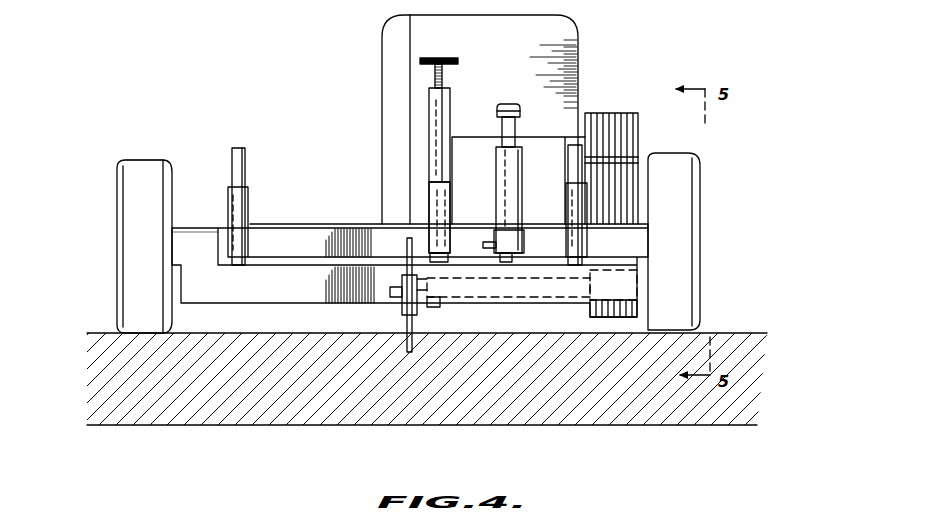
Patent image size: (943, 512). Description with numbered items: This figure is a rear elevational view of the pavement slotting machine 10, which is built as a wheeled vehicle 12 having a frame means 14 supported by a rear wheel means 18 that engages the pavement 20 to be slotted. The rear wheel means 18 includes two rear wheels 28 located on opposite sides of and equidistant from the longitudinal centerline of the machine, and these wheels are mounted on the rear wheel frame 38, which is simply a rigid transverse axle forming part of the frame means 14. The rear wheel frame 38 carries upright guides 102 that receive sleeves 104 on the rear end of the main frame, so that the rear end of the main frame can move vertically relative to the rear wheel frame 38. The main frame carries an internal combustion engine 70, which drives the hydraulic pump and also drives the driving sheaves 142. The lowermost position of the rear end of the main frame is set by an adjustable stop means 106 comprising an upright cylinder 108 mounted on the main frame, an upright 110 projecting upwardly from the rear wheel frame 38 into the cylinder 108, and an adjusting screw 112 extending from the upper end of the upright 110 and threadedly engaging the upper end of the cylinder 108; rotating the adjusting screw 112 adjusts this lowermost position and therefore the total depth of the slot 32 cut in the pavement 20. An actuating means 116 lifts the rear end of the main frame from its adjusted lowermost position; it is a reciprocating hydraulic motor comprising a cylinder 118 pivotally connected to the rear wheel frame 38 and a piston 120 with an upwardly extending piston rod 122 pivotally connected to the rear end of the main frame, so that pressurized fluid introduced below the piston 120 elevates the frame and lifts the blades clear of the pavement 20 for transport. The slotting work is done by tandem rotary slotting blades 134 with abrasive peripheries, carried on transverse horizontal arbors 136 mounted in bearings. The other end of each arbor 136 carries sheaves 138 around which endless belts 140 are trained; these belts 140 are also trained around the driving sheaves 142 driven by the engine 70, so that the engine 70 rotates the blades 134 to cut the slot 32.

The pavement slotting machine 10 is at (614, 48).
The wheeled vehicle 12 is at (594, 77).
The frame means 14 is at (313, 225).
The rear wheel means 18 is at (156, 160).
The pavement 20 is at (103, 333).
The rear wheels 28 is at (137, 238).
The slot 32 is at (412, 352).
The rear wheel frame 38 is at (192, 240).
The internal combustion engine 70 is at (381, 90).
The upright guides 102 is at (237, 157).
The sleeves 104 is at (250, 205).
The adjustable stop means 106 is at (452, 100).
The upright cylinder 108 is at (428, 150).
The upright 110 is at (442, 263).
The adjusting screw 112 is at (448, 62).
The actuating means 116 is at (523, 181).
The cylinder 118 is at (497, 197).
The piston 120 is at (498, 232).
The piston rod 122 is at (507, 128).
The rotary slotting blades 134 is at (407, 315).
The arbors 136 is at (531, 298).
The sheaves 138 is at (592, 309).
The endless belts 140 is at (620, 113).
The driving sheaves 142 is at (636, 137).